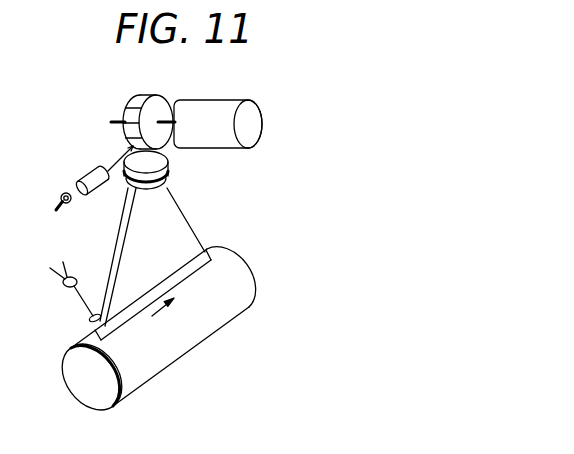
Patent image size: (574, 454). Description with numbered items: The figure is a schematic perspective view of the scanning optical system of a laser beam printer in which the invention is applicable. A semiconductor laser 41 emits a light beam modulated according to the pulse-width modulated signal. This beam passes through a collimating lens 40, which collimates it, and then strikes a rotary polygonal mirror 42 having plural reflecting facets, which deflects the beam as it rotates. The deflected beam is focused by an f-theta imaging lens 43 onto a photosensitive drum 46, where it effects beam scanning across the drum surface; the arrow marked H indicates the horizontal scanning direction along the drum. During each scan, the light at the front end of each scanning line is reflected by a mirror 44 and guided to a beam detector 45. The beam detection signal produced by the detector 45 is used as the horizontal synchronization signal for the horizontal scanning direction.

The collimating lens 40 is at (82, 178).
The semiconductor laser 41 is at (62, 192).
The rotary polygonal mirror 42 is at (142, 93).
The f-theta imaging lens 43 is at (168, 172).
The mirror 44 is at (90, 320).
The beam detector 45 is at (62, 288).
The photosensitive drum 46 is at (248, 282).
The scanning direction H is at (148, 322).